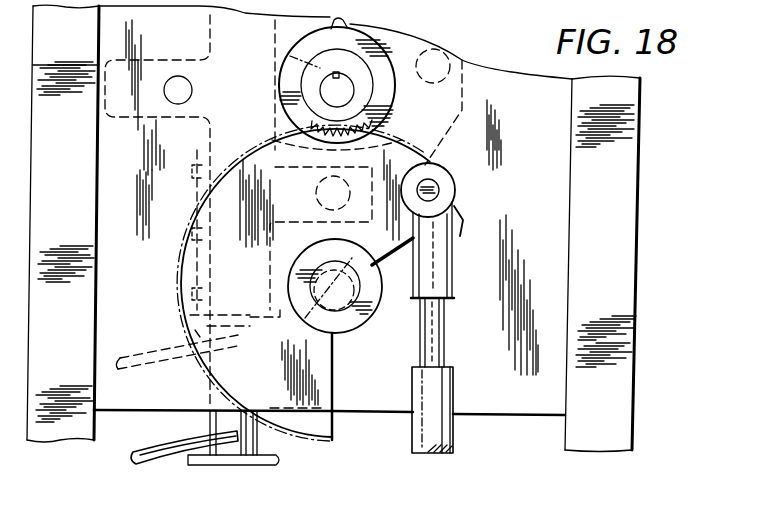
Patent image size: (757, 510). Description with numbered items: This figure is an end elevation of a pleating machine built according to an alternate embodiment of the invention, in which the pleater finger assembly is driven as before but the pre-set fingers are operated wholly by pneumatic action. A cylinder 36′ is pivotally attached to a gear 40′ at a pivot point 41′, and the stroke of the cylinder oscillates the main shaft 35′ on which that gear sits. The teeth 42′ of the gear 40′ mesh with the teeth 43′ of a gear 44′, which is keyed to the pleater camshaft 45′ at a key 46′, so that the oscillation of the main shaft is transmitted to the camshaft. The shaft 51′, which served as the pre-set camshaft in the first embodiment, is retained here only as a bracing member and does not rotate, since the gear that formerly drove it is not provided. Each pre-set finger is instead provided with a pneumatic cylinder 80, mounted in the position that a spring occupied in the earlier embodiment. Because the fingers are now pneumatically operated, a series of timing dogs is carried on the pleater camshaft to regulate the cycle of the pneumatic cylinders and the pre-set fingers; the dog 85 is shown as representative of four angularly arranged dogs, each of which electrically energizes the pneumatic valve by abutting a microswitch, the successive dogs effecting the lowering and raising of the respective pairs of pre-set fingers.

The dog 85 is at (350, 21).
The pleater camshaft 45′ is at (348, 83).
The gear 44′ is at (352, 96).
The key 46′ is at (327, 71).
The teeth 43′ is at (341, 123).
The teeth 42′ is at (303, 283).
The shaft 51′ is at (186, 88).
The main shaft 35′ is at (358, 287).
The pivot point 41′ is at (437, 187).
The gear 40′ is at (455, 214).
The cylinder 36′ is at (455, 425).
The pneumatic cylinder 80 is at (258, 441).